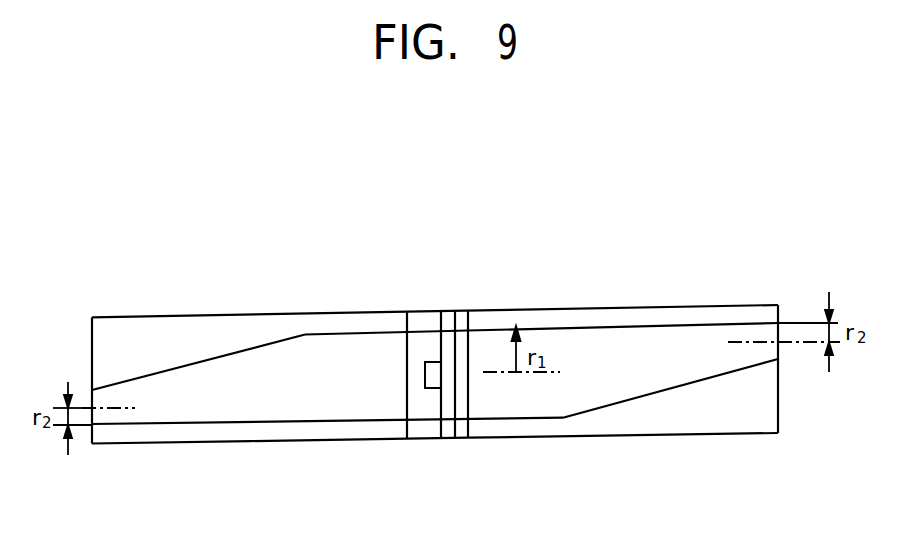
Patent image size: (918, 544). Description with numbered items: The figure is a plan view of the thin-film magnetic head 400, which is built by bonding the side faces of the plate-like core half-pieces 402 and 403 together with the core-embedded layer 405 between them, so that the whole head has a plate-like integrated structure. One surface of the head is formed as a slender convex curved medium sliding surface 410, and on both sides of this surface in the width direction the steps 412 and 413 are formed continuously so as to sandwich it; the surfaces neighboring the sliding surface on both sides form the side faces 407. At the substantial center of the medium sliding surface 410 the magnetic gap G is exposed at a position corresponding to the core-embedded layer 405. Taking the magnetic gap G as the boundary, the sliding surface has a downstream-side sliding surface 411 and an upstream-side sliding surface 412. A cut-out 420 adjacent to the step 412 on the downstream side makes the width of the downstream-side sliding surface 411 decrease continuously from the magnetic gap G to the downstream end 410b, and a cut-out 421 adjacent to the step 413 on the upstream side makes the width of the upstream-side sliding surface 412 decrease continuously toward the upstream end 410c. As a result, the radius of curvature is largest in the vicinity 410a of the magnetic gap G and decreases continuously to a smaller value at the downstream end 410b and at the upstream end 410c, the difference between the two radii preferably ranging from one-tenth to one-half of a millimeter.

The magnetic head 400 is at (700, 282).
The medium sliding surface 410 is at (360, 348).
The vicinity of the magnetic gap 410a is at (493, 345).
The downstream end 410b is at (772, 334).
The upstream end 410c is at (102, 368).
The downstream-side sliding surface 411 is at (632, 343).
The step (upstream-side sliding surface) 412 is at (280, 348).
The step 413 is at (258, 322).
The cut-out 421 is at (203, 355).
The cut-out 420 is at (680, 388).
The side face 407 is at (158, 334).
The core half-piece 402 is at (268, 440).
The core half-piece 403 is at (548, 438).
The core-embedded layer 405 is at (420, 440).
The magnetic gap G is at (438, 373).